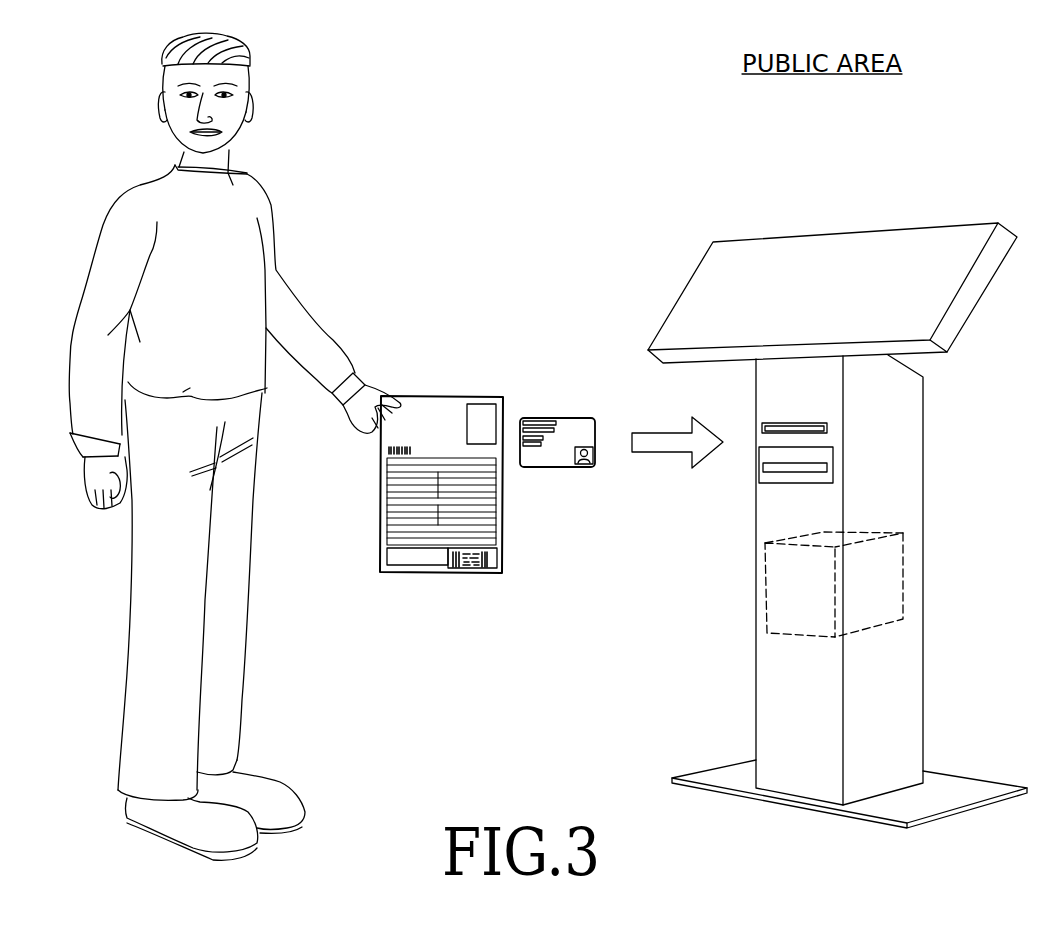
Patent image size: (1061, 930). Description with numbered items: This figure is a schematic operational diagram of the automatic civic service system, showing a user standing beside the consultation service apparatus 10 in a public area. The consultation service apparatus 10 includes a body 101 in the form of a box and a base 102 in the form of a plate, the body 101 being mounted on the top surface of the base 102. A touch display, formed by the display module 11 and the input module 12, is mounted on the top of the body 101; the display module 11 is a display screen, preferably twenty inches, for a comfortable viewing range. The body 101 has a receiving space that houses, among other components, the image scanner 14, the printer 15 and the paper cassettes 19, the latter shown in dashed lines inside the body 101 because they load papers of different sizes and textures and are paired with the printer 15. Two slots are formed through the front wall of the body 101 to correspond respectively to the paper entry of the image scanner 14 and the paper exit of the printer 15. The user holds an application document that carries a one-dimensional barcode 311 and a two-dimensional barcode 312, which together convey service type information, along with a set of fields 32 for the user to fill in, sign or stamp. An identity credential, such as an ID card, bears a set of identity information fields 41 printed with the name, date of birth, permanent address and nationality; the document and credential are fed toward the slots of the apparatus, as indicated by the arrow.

The consultation service apparatus 10 is at (700, 213).
The display module 11 is at (930, 225).
The input module 12 is at (703, 305).
The image scanner 14 is at (773, 423).
The printer 15 is at (778, 483).
The paper cassettes 19 is at (765, 597).
The body 101 is at (925, 708).
The base 102 is at (965, 785).
The set of fields 32 is at (388, 512).
The one-dimensional barcode 311 is at (390, 451).
The two-dimensional barcode 312 is at (470, 567).
The set of identity information fields 41 is at (543, 422).